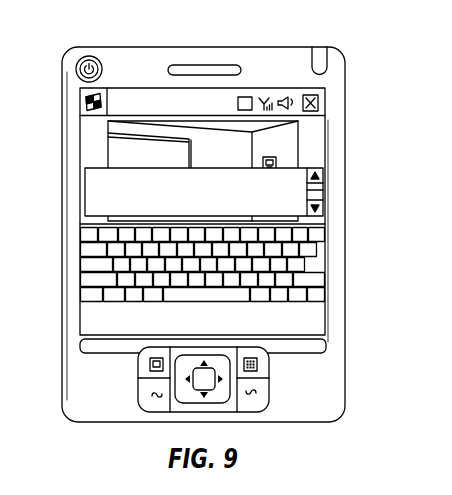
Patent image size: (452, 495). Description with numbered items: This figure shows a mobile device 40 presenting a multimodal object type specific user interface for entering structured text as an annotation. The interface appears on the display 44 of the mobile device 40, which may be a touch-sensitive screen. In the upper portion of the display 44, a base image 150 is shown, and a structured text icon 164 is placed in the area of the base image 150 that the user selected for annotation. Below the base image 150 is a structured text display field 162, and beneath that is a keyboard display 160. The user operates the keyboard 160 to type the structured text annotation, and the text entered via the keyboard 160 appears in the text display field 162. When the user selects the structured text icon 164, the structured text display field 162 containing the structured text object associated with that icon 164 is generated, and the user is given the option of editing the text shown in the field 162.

The mobile device 40 is at (130, 36).
The display 44 is at (203, 98).
The base image 150 is at (122, 160).
The keyboard display 160 is at (306, 322).
The structured text display field 162 is at (292, 202).
The structured text icon 164 is at (277, 163).